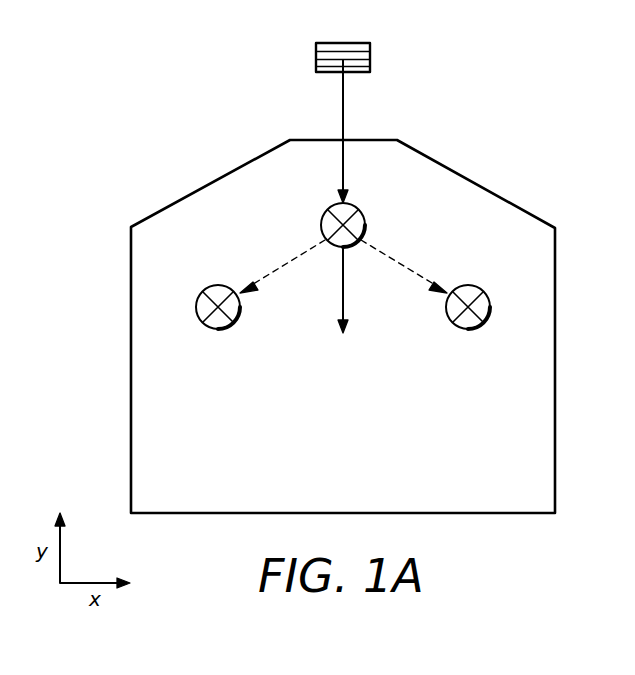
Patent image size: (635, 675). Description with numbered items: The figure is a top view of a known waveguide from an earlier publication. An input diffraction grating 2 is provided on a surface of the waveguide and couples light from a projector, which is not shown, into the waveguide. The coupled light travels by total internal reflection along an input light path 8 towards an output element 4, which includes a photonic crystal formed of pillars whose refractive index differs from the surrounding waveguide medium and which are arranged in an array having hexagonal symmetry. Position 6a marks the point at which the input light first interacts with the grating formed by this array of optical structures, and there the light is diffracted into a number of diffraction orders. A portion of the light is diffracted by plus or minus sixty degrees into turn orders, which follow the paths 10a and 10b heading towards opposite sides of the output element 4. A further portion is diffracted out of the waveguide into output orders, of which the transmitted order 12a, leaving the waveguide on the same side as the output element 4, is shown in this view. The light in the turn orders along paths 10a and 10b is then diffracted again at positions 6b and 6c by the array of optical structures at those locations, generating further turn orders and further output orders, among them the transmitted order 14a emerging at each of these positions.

The input diffraction grating 2 is at (370, 55).
The output element 4 is at (548, 497).
The input light path 8 is at (344, 100).
The position 6a is at (322, 214).
The position 6b is at (473, 285).
The position 6c is at (213, 285).
The turn-order path 10a is at (405, 268).
The turn-order path 10b is at (283, 268).
The transmitted order 12a is at (365, 214).
The transmitted order 14a is at (217, 330).